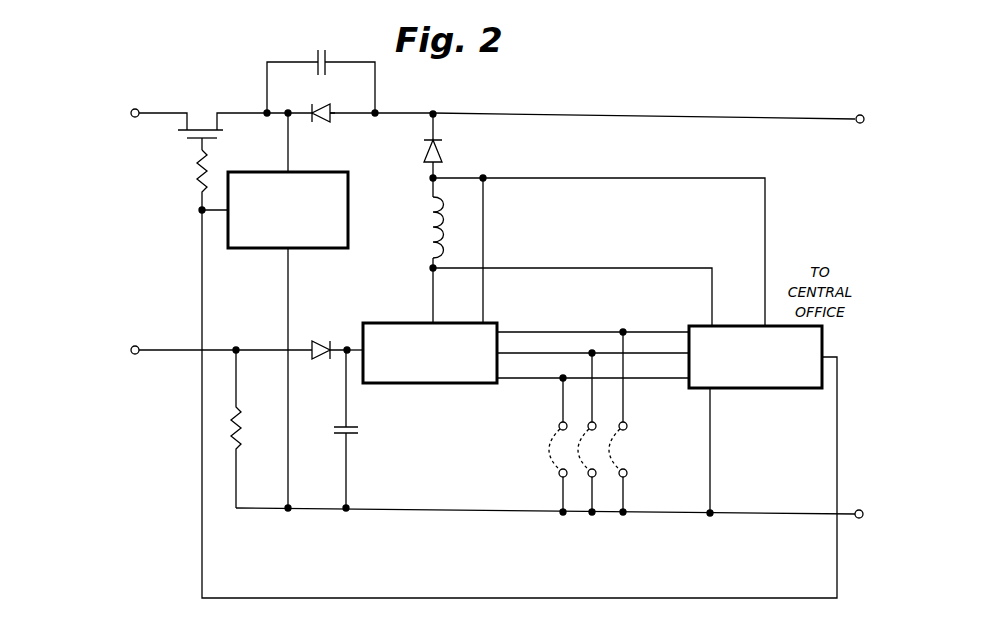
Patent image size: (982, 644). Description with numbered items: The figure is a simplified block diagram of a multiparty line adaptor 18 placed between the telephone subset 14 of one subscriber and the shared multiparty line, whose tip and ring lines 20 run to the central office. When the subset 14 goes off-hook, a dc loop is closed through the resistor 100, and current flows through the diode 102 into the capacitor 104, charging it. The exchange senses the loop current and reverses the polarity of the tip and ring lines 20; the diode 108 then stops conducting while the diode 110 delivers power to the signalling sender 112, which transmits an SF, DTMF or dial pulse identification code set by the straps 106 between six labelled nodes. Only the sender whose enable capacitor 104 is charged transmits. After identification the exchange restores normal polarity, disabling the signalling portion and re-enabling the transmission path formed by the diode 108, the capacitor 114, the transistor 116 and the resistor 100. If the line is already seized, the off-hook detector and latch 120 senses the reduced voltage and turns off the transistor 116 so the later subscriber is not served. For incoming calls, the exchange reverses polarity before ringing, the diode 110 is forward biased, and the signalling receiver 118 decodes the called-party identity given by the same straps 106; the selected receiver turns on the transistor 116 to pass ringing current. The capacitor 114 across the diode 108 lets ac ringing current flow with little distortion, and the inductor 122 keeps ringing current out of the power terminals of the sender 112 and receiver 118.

The subset 14 is at (147, 266).
The multiparty line adaptor 18 is at (528, 558).
The tip and ring lines 20 is at (825, 124).
The resistor 100 is at (238, 404).
The diode 102 is at (332, 362).
The capacitor 104 is at (348, 440).
The straps 106 is at (662, 453).
The diode 108 is at (345, 90).
The diode 110 is at (440, 142).
The signalling sender 112 is at (400, 322).
The capacitor 114 is at (327, 51).
The transistor 116 is at (199, 104).
The signalling receiver 118 is at (722, 390).
The off-hook detector and latch 120 is at (308, 171).
The inductor 122 is at (427, 208).